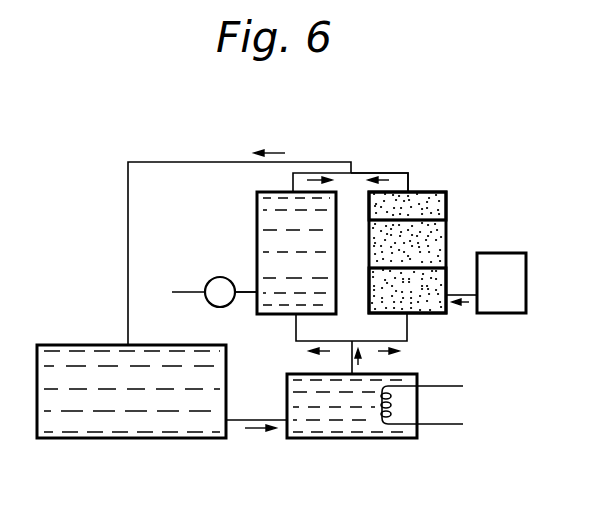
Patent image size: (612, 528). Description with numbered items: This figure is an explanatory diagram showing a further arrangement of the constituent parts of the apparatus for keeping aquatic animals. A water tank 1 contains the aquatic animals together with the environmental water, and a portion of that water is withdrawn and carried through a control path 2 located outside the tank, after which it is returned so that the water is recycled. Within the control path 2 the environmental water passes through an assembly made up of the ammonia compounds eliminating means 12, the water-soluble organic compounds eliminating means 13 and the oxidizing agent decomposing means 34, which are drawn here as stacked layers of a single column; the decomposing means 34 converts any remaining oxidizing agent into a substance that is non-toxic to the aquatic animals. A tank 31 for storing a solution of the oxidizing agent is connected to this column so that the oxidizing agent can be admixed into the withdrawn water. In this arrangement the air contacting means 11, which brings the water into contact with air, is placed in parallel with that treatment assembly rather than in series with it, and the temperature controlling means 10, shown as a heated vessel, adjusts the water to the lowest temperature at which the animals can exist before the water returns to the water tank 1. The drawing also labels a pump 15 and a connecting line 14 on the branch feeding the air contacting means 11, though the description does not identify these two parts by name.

The water tank 1 is at (145, 430).
The control path 2 is at (428, 165).
The temperature controlling means 10 is at (381, 420).
The air contacting means 11 is at (283, 295).
The ammonia compounds eliminating means 12 is at (433, 304).
The water-soluble organic compounds eliminating means 13 is at (438, 236).
The conduit 14 is at (243, 296).
The pump 15 is at (217, 278).
The oxidizing agent solution tank 31 is at (516, 290).
The oxidizing agent decomposing means 34 is at (440, 201).